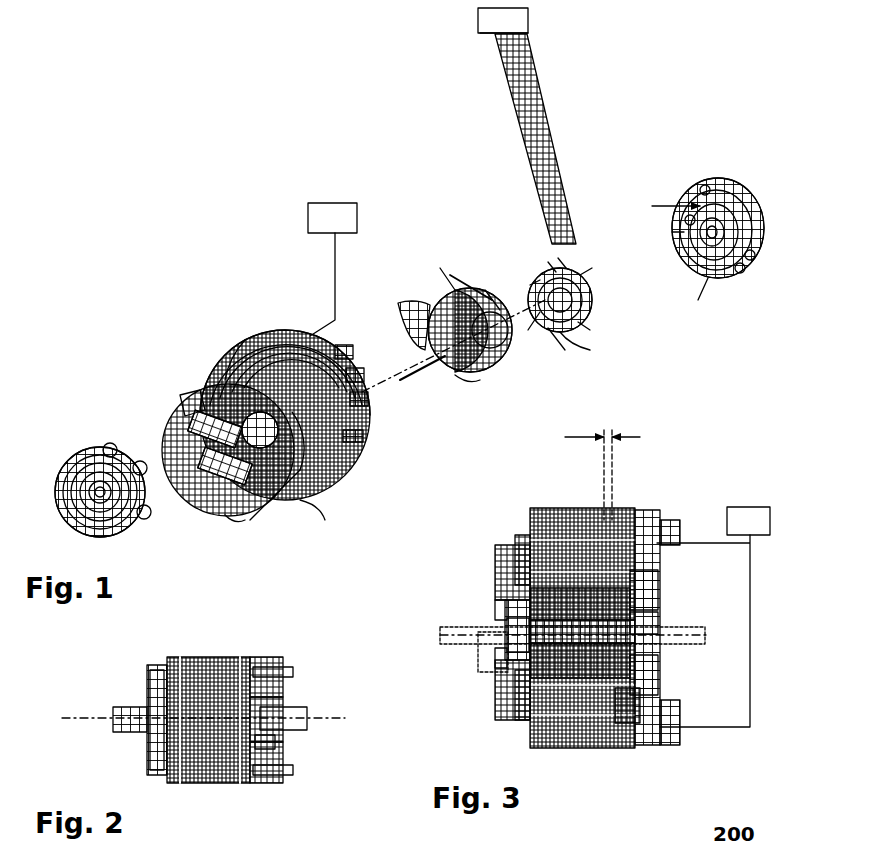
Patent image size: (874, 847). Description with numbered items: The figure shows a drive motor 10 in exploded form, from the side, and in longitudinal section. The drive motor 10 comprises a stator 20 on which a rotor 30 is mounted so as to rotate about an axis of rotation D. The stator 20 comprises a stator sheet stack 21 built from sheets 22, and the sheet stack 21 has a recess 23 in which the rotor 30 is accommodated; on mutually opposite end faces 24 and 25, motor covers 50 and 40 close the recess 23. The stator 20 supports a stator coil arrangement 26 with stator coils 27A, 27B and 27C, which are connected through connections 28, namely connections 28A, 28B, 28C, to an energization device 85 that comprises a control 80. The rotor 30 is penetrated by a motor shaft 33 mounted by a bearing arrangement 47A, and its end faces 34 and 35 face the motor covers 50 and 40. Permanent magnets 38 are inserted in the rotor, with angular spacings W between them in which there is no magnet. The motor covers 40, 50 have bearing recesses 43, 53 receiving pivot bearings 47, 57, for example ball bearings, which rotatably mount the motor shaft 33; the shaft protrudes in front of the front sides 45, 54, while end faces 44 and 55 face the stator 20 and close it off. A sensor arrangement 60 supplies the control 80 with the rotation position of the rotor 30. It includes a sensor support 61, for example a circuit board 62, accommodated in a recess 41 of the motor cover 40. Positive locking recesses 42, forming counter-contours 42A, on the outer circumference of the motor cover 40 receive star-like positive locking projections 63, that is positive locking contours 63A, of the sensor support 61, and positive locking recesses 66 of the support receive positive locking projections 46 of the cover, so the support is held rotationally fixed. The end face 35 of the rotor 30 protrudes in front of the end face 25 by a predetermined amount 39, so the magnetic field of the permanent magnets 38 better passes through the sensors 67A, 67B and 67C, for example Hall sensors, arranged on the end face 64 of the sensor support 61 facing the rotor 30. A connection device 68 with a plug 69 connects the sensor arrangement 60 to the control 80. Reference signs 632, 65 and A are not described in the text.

In FIG. 1, the drive motor 10 is at (112, 126).
In FIG. 2, the drive motor 10 is at (235, 704).
In FIG. 3, the drive motor 10 is at (595, 598).
In FIG. 1, the stator 20 is at (250, 430).
In FIG. 2, the stator 20 is at (172, 656).
In FIG. 3, the stator 20 is at (556, 620).
In FIG. 1, the stator sheet stack 21 is at (198, 360).
In FIG. 3, the stator sheet stack 21 is at (545, 510).
In FIG. 1, the sheets 22 is at (298, 505).
In FIG. 1, the recess 23 is at (200, 422).
In FIG. 1, the end face 24 is at (225, 525).
In FIG. 1, the end face 25 is at (350, 440).
In FIG. 3, the end face 25 is at (598, 735).
In FIG. 1, the stator coil arrangement 26 is at (168, 402).
In FIG. 3, the stator coil arrangement 26 is at (522, 530).
In FIG. 1, the stator coil 27A is at (240, 335).
In FIG. 1, the stator coil 27B is at (296, 414).
In FIG. 1, the stator coil 27C is at (270, 470).
In FIG. 3, the connections 28 is at (658, 540).
In FIG. 2, the connection 28A is at (290, 668).
In FIG. 2, the connection 28B is at (292, 730).
In FIG. 2, the connection 28C is at (290, 778).
In FIG. 1, the rotor 30 is at (460, 337).
In FIG. 1, the motor shaft 33 is at (405, 385).
In FIG. 2, the motor shaft 33 is at (300, 712).
In FIG. 3, the motor shaft 33 is at (682, 620).
In FIG. 1, the end face 34 is at (452, 392).
In FIG. 1, the end face 35 is at (508, 355).
In FIG. 3, the end face 35 is at (605, 568).
In FIG. 1, the permanent magnets 38 is at (410, 305).
In FIG. 3, the predetermined amount 39 is at (607, 440).
In FIG. 1, the motor cover 40 is at (693, 237).
In FIG. 1, the recess 41 is at (722, 205).
In FIG. 1, the positive locking recesses 42 is at (700, 183).
In FIG. 1, the positive locking counter-contours 42A is at (740, 275).
In FIG. 1, the bearing recess 43 is at (726, 222).
In FIG. 3, the bearing recess 43 is at (650, 672).
In FIG. 1, the end face 44 is at (672, 230).
In FIG. 3, the front side 45 is at (655, 590).
In FIG. 1, the positive locking projections 46 is at (700, 312).
In FIG. 1, the pivot bearing 47 is at (722, 236).
In FIG. 3, the pivot bearing 47 is at (648, 616).
In FIG. 3, the bearing arrangement 47A is at (500, 598).
In FIG. 1, the motor cover 50 is at (98, 468).
In FIG. 3, the motor cover 50 is at (473, 620).
In FIG. 1, the bearing recess 53 is at (88, 480).
In FIG. 3, the bearing recess 53 is at (505, 672).
In FIG. 1, the front side 54 is at (70, 492).
In FIG. 1, the end face 55 is at (150, 515).
In FIG. 1, the pivot bearing 57 is at (96, 500).
In FIG. 3, the pivot bearing 57 is at (500, 612).
In FIG. 1, the sensor arrangement 60 is at (577, 287).
In FIG. 3, the sensor arrangement 60 is at (630, 695).
In FIG. 1, the sensor support 61 is at (598, 300).
In FIG. 1, the circuit board 62 is at (578, 270).
In FIG. 1, the positive locking projections 63 is at (592, 350).
In FIG. 1, the positive locking contours 63A is at (565, 352).
In FIG. 1, the sensor connector 632 is at (545, 258).
In FIG. 1, the end face 64 is at (530, 283).
In FIG. 1, the sensor fastener 65 is at (596, 268).
In FIG. 1, the positive locking recesses 66 is at (558, 312).
In FIG. 1, the sensor 67A is at (562, 255).
In FIG. 1, the sensor 67B is at (592, 330).
In FIG. 1, the sensor 67C is at (530, 332).
In FIG. 1, the connection device 68 is at (518, 130).
In FIG. 1, the plug 69 is at (530, 33).
In FIG. 1, the control 80 is at (480, 22).
In FIG. 1, the energization device 85 is at (322, 206).
In FIG. 3, the energization device 85 is at (738, 508).
In FIG. 1, the axis A is at (265, 470).
In FIG. 1, the axis of rotation D is at (390, 370).
In FIG. 2, the axis of rotation D is at (72, 722).
In FIG. 3, the axis of rotation D is at (440, 638).
In FIG. 1, the angular spacings W is at (455, 276).